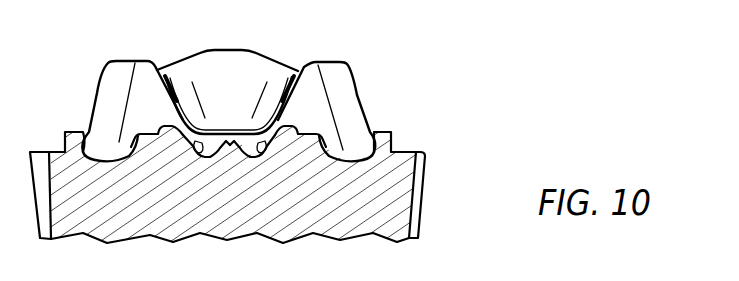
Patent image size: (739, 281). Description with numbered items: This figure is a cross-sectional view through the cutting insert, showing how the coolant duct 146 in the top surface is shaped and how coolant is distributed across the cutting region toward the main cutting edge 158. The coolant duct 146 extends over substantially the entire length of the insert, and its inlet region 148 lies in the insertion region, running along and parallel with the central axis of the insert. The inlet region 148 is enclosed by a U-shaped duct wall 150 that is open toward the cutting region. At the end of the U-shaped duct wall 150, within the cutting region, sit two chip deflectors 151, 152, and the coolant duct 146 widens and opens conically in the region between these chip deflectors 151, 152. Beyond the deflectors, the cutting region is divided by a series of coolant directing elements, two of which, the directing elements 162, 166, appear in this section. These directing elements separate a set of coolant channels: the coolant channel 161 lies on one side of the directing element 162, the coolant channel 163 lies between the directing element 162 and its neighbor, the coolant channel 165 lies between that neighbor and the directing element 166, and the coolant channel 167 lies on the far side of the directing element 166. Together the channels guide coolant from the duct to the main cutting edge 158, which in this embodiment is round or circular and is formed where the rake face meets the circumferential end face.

The main cutting edge 158 is at (425, 150).
The U-shaped duct wall 150 is at (221, 135).
The inlet region 148 is at (200, 75).
The coolant duct 146 is at (243, 82).
The chip deflector 151 is at (127, 61).
The chip deflector 152 is at (329, 61).
The coolant directing element 162 is at (168, 118).
The coolant directing element 166 is at (282, 110).
The coolant channel 161 is at (115, 153).
The coolant channel 167 is at (340, 153).
The coolant channel 163 is at (192, 148).
The coolant channel 165 is at (265, 155).